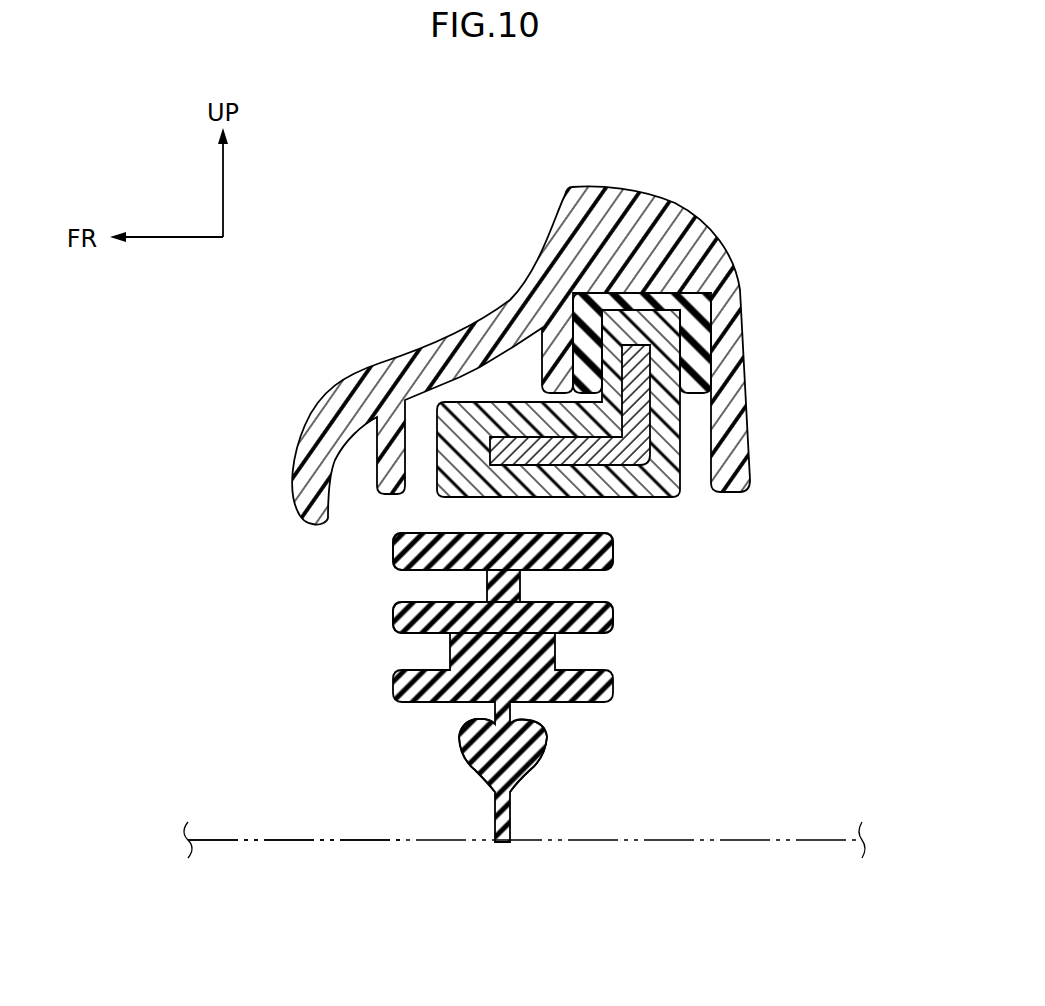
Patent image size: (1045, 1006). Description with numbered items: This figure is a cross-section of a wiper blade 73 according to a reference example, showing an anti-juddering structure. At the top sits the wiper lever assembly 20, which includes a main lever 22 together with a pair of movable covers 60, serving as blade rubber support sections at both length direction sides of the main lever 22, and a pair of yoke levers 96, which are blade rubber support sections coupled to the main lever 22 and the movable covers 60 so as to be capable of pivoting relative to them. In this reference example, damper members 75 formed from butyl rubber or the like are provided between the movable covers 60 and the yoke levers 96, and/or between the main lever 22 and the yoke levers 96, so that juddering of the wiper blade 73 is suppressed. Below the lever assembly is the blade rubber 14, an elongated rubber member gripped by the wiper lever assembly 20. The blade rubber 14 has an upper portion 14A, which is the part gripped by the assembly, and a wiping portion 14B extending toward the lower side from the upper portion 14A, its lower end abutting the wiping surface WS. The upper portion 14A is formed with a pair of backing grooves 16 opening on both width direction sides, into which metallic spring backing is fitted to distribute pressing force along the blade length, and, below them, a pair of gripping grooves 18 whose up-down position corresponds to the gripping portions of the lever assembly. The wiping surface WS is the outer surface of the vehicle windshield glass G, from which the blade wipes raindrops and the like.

The wiper lever assembly 20 is at (604, 353).
The movable cover 60 is at (521, 323).
The main lever 22 is at (612, 189).
The damper member 75 is at (695, 353).
The yoke lever 96 is at (675, 497).
The wiper blade 73 is at (611, 687).
The backing groove 16 is at (487, 571).
The gripping groove 18 is at (450, 634).
The blade rubber 14 is at (517, 687).
The upper portion 14A is at (577, 702).
The wiping portion 14B is at (521, 781).
The windshield glass G is at (290, 830).
The wiping surface WS is at (800, 840).